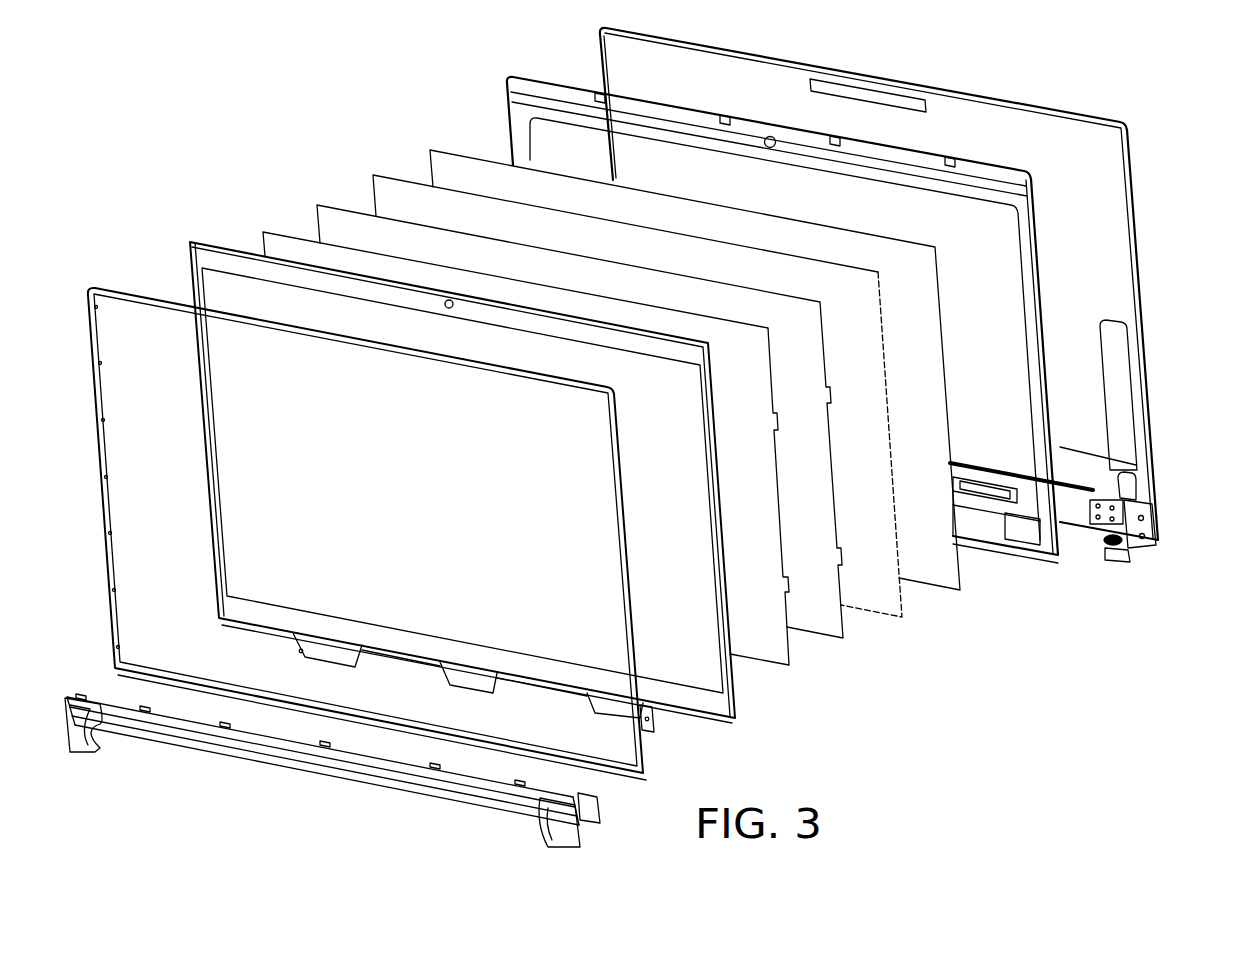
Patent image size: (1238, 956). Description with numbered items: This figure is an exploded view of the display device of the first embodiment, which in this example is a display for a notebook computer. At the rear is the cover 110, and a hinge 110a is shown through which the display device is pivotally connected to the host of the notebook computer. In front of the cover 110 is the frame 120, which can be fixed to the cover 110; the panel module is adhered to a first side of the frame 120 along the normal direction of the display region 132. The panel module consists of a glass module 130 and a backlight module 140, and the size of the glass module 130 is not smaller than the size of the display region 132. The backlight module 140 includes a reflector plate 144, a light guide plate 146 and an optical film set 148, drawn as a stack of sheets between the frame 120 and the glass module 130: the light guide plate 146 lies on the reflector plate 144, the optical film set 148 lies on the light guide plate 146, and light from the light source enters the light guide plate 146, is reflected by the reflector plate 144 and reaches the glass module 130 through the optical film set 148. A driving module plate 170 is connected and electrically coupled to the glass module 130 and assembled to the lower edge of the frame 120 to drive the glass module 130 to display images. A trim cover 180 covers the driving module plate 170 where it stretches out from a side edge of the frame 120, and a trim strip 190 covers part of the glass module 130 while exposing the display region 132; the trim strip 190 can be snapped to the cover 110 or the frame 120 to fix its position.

The cover 110 is at (1098, 133).
The hinge 110a is at (1142, 531).
The frame 120 is at (921, 184).
The glass module 130 is at (712, 671).
The display region 132 is at (668, 548).
The backlight module 140 is at (678, 361).
The reflector plate 144 is at (455, 150).
The light guide plate 146 is at (378, 173).
The optical film set 148 is at (327, 218).
The driving module plate 170 is at (645, 758).
The trim cover 180 is at (477, 793).
The trim strip 190 is at (547, 697).